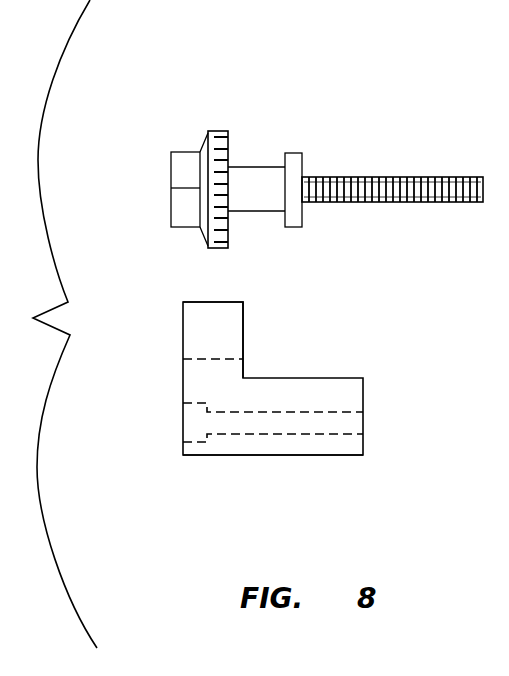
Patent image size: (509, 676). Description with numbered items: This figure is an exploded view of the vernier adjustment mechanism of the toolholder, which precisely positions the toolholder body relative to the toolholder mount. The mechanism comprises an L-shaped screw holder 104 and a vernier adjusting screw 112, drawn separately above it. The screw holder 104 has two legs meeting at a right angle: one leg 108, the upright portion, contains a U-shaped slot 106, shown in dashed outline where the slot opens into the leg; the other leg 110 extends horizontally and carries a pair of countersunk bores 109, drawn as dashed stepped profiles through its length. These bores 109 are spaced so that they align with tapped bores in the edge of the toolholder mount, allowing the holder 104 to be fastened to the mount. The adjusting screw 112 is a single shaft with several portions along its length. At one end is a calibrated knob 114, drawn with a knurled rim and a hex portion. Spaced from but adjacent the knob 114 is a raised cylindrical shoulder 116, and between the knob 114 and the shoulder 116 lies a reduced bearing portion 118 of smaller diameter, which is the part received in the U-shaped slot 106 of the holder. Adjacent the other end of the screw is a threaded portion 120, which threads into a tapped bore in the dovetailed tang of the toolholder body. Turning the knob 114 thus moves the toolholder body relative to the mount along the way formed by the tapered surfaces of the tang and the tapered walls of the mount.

The L-shaped screw holder 104 is at (273, 392).
The U-shaped slot 106 is at (203, 359).
The leg 108 is at (183, 310).
The countersunk bores 109 is at (200, 422).
The other leg 110 is at (227, 455).
The vernier adjusting screw 112 is at (327, 165).
The calibrated knob 114 is at (217, 130).
The raised cylindrical shoulder 116 is at (293, 153).
The reduced bearing portion 118 is at (257, 165).
The threaded portion 120 is at (388, 202).